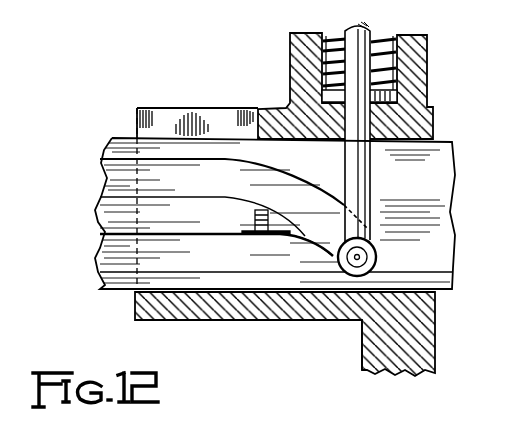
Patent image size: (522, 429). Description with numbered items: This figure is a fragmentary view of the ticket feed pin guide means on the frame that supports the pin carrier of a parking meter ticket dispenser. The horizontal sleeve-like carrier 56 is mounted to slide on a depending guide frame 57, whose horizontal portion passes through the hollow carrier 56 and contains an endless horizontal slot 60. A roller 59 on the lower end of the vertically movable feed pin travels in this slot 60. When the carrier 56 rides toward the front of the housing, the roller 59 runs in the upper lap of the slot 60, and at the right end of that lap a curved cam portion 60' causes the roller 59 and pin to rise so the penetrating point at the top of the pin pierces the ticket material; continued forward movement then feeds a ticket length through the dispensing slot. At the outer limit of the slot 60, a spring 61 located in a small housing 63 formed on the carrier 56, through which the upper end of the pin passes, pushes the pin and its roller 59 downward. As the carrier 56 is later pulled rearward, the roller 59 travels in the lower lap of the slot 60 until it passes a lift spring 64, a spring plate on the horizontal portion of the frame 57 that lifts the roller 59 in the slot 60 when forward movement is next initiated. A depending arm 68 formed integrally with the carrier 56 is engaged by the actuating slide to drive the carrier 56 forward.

The carrier 56 is at (327, 322).
The guide frame 57 is at (447, 168).
The roller 59 is at (377, 255).
The endless horizontal slot 60 is at (195, 238).
The cam portion 60' is at (222, 197).
The spring 61 is at (320, 53).
The small housing 63 is at (423, 86).
The lift spring 64 is at (325, 246).
The depending arm 68 is at (367, 353).